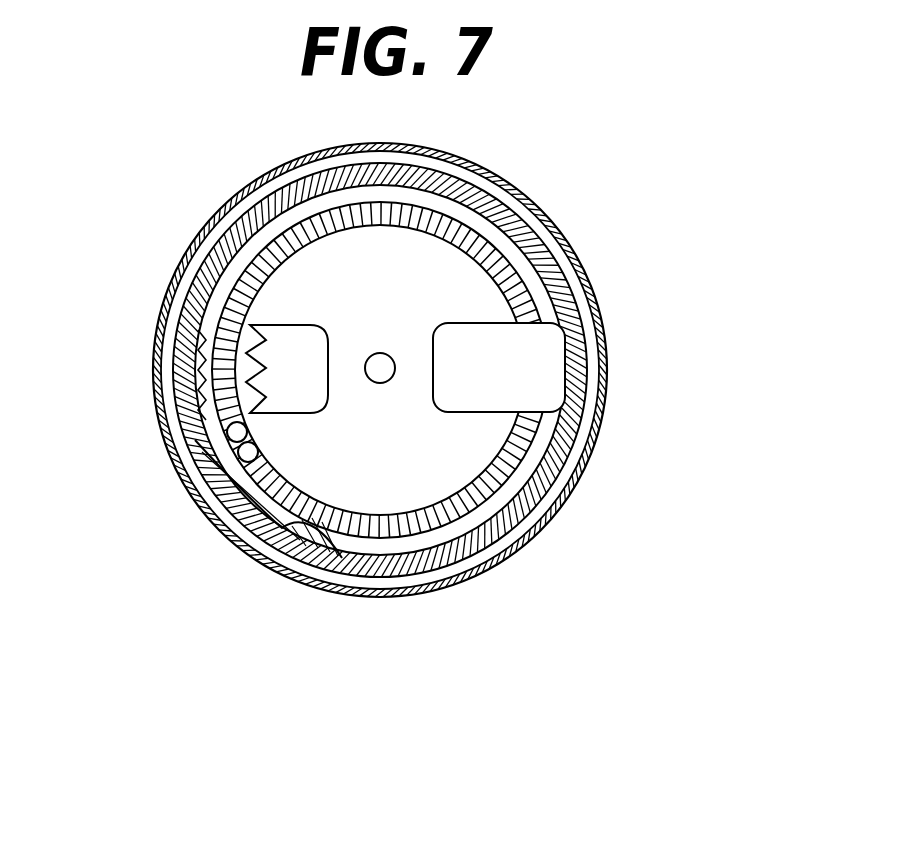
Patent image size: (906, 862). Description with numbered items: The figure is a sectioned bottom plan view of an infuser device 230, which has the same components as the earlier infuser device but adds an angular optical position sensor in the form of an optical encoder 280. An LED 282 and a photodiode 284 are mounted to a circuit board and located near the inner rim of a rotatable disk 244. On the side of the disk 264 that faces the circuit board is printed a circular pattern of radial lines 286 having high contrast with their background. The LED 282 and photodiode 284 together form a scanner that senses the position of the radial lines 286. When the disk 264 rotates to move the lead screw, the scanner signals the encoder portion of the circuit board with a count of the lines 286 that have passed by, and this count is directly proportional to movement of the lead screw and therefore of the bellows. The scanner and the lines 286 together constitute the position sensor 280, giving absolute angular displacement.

The infuser device 230 is at (640, 180).
The optical encoder 280 is at (490, 312).
The LED 282 is at (235, 432).
The photodiode 284 is at (217, 497).
The radial lines 286 is at (433, 510).
The disk 264 is at (342, 553).
The rotatable disk 244 is at (380, 368).